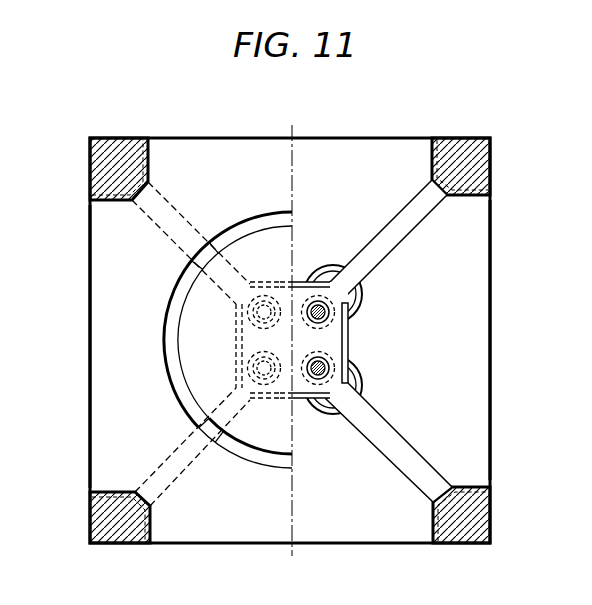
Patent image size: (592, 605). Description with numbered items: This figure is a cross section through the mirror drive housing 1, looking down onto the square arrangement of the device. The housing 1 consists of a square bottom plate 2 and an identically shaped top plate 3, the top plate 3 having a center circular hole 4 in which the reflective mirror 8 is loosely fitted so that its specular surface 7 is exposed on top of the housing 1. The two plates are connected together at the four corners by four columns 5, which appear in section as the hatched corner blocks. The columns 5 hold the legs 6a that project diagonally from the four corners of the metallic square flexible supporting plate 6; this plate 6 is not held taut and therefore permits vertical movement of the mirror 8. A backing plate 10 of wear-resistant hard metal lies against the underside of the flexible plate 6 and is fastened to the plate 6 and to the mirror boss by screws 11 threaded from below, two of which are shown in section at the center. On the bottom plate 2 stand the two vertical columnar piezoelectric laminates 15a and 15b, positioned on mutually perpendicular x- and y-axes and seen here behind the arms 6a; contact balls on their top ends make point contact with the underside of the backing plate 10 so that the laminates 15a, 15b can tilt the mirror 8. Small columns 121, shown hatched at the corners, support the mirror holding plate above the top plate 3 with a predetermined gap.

The housing 1 is at (505, 476).
The bottom plate 2 is at (480, 347).
The top plate 3 is at (96, 321).
The center circular hole 4 is at (168, 316).
The columns 5 is at (478, 166).
The flexible supporting plate 6 is at (302, 400).
The legs 6a is at (178, 212).
The specular surface 7 is at (236, 442).
The reflective mirror 8 is at (255, 453).
The backing plate 10 is at (351, 333).
The screws 11 is at (315, 302).
The piezoelectric laminate 15a is at (333, 270).
The piezoelectric laminate 15b is at (366, 380).
The small columns 121 is at (92, 163).